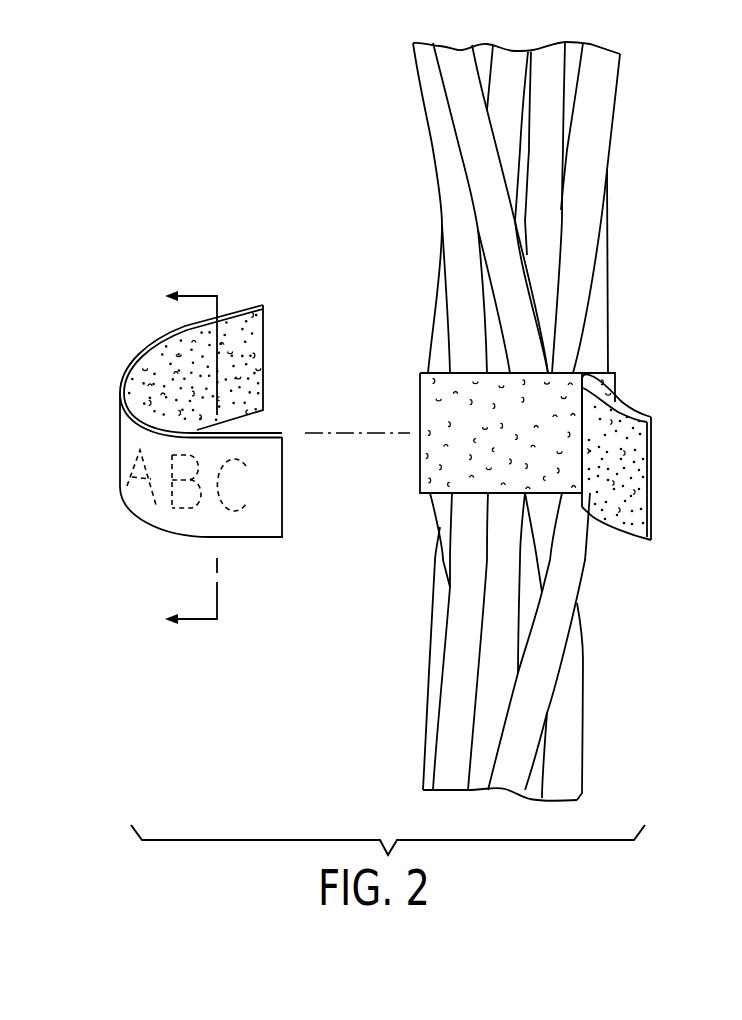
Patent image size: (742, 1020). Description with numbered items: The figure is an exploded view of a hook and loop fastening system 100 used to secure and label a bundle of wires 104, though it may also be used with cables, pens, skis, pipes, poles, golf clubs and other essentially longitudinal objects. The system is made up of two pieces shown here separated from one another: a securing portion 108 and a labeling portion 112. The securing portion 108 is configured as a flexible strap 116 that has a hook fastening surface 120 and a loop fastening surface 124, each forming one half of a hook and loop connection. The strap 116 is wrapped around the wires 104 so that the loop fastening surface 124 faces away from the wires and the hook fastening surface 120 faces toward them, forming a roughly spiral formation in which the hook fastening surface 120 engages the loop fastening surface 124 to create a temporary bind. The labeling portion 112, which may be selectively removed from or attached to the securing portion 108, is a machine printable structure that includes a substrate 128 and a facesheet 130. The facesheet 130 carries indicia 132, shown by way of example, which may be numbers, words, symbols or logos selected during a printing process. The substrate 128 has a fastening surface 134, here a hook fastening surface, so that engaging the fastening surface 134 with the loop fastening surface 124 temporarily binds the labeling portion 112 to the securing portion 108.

The hook and loop fastening system 100 is at (222, 182).
The bundle of wires 104 is at (613, 107).
The securing portion 108 is at (700, 342).
The labeling portion 112 is at (80, 311).
The strap 116 is at (570, 368).
The hook fastening surface 120 is at (620, 523).
The loop fastening surface 124 is at (430, 400).
The substrate 128 is at (265, 332).
The facesheet 130 is at (126, 428).
The indicia 132 is at (182, 503).
The fastening surface 134 is at (250, 390).